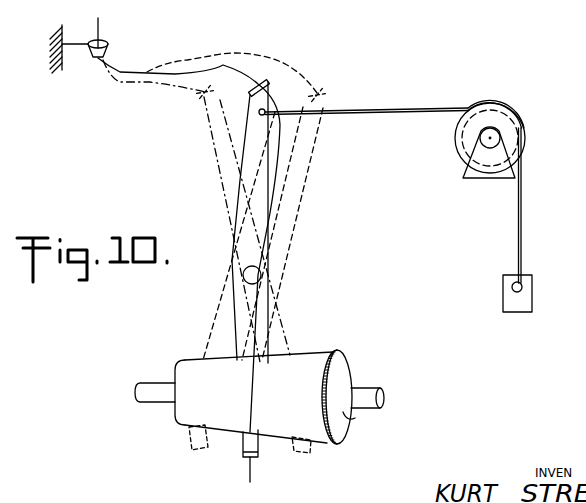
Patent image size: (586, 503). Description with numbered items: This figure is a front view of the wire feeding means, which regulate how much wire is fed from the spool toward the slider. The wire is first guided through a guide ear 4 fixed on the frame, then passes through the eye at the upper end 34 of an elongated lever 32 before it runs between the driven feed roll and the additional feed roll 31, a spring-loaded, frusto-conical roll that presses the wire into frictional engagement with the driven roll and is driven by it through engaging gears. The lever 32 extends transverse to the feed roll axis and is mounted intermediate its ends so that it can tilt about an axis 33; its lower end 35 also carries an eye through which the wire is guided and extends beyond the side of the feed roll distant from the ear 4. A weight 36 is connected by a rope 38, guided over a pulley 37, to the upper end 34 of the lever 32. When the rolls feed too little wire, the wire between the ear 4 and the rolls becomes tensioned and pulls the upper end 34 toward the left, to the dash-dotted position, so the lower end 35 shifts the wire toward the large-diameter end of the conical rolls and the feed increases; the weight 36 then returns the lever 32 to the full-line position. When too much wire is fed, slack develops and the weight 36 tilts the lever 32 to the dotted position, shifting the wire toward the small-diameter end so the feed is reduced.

The guide ear 4 is at (93, 58).
The additional feed roll 31 is at (297, 367).
The elongated lever 32 is at (253, 155).
The axis 33 is at (256, 274).
The upper end of lever 34 is at (265, 80).
The lower end of lever 35 is at (247, 458).
The weight 36 is at (537, 287).
The pulley 37 is at (528, 137).
The rope 38 is at (383, 115).